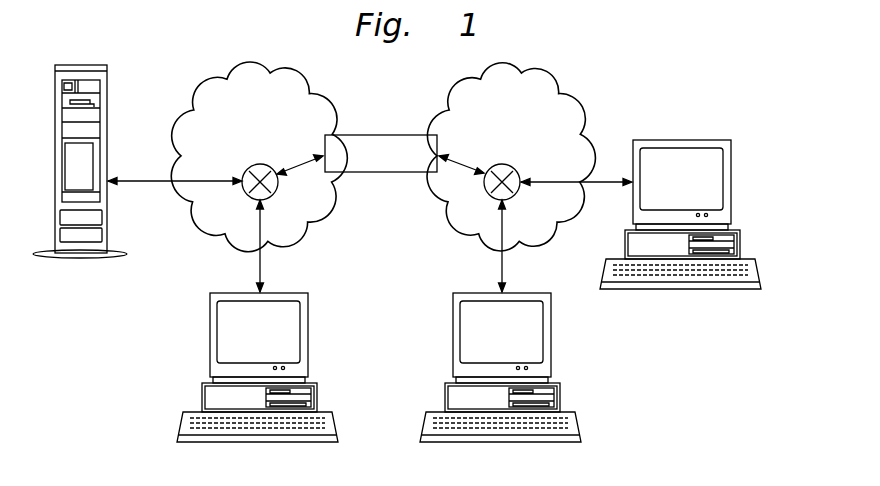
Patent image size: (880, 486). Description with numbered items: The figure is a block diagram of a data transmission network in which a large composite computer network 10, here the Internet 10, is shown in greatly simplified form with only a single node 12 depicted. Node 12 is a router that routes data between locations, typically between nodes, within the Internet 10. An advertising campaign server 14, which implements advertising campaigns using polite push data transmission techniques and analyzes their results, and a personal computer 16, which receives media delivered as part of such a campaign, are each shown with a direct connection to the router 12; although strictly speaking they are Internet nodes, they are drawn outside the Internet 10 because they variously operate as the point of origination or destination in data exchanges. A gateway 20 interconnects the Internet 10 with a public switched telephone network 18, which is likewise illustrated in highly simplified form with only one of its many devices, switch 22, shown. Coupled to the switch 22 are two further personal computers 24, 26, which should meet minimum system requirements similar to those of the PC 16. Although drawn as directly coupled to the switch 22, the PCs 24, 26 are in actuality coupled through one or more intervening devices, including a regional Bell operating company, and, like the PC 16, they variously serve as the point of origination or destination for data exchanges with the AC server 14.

The computer network 10 is at (168, 118).
The node 12 is at (258, 165).
The advertising campaign server 14 is at (83, 66).
The personal computer 16 is at (210, 330).
The public switched telephone network 18 is at (591, 118).
The gateway 20 is at (381, 134).
The switch 22 is at (503, 165).
The personal computer 24 is at (736, 180).
The personal computer 26 is at (553, 335).